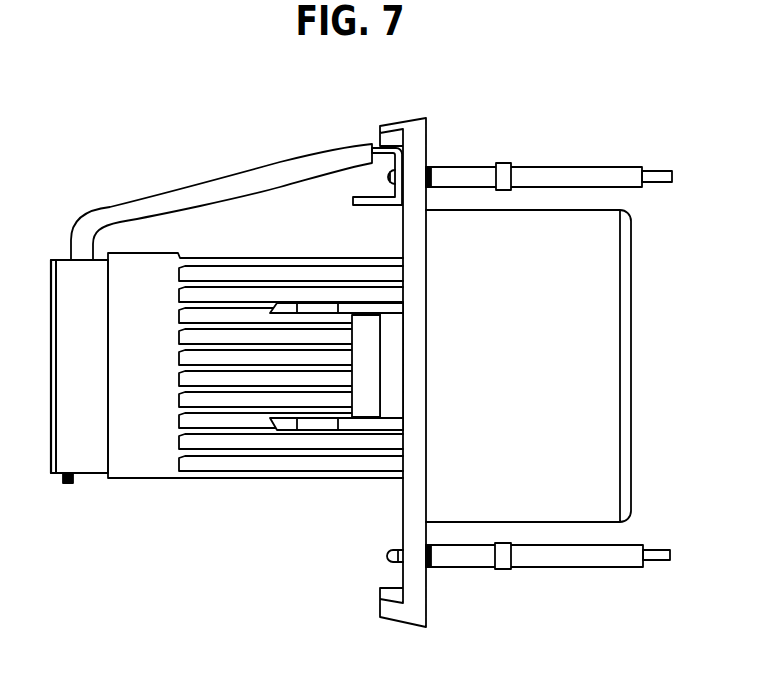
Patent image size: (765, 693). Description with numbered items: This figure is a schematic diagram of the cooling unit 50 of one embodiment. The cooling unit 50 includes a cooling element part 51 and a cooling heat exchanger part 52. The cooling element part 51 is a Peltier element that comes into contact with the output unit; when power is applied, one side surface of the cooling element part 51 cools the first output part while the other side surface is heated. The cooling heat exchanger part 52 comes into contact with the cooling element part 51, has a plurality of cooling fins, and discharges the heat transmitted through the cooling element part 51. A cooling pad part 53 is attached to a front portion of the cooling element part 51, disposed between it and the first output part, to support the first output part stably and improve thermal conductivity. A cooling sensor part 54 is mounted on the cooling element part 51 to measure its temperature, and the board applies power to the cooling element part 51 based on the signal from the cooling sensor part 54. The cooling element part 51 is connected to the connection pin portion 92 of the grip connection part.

The cooling unit 50 is at (213, 449).
The cooling element part 51 is at (93, 475).
The cooling heat exchanger part 52 is at (255, 418).
The cooling pad part 53 is at (53, 460).
The cooling sensor part 54 is at (68, 483).
The connection pin portion 92 is at (572, 173).